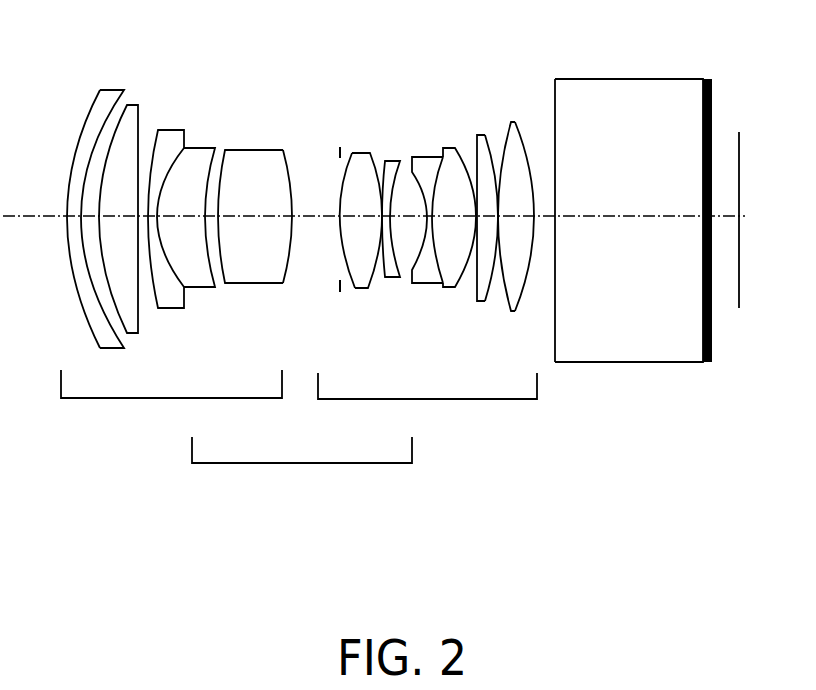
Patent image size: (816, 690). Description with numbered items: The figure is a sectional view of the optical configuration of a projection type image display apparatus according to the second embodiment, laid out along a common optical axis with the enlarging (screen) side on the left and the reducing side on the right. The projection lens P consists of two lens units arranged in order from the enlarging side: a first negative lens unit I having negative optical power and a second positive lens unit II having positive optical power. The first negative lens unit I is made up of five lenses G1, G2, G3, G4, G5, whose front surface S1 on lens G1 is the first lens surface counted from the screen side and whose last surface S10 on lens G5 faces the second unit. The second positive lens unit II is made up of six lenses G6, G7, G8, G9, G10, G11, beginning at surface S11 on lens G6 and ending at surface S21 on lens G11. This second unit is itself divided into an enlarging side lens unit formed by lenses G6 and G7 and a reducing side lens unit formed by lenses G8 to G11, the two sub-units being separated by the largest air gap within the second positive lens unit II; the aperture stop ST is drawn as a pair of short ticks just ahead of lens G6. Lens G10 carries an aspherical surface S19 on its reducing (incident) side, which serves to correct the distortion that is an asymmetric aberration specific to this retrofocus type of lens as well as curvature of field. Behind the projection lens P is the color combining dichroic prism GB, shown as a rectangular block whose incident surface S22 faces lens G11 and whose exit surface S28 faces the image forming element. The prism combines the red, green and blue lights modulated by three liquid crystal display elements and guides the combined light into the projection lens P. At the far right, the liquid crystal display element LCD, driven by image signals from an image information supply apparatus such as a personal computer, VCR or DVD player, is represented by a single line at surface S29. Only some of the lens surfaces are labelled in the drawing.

The lens G1 is at (68, 194).
The lens G2 is at (134, 108).
The lens G3 is at (175, 133).
The lens G4 is at (198, 150).
The lens G5 is at (278, 227).
The lens G6 is at (372, 213).
The lens G7 is at (392, 279).
The lens G8 is at (425, 285).
The lens G9 is at (450, 290).
The lens G10 is at (480, 211).
The lens G11 is at (553, 264).
The aperture stop ST is at (338, 152).
The color combining dichroic prism GB is at (658, 215).
The liquid crystal display element LCD is at (759, 252).
The lens surface S1 is at (84, 313).
The lens surface S10 is at (286, 268).
The lens surface S11 is at (345, 153).
The aspherical surface S19 is at (490, 140).
The lens surface S21 is at (530, 270).
The surface S22 is at (556, 115).
The surface S28 is at (712, 318).
The surface S29 is at (739, 272).
The first negative lens unit I is at (171, 400).
The second positive lens unit II is at (427, 403).
The projection lens P is at (302, 465).